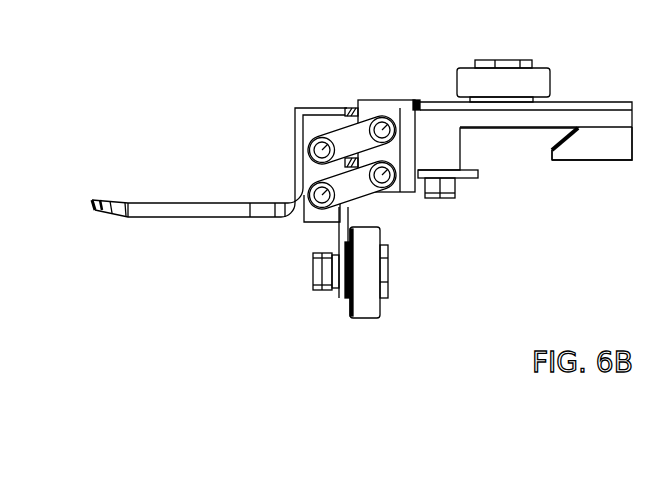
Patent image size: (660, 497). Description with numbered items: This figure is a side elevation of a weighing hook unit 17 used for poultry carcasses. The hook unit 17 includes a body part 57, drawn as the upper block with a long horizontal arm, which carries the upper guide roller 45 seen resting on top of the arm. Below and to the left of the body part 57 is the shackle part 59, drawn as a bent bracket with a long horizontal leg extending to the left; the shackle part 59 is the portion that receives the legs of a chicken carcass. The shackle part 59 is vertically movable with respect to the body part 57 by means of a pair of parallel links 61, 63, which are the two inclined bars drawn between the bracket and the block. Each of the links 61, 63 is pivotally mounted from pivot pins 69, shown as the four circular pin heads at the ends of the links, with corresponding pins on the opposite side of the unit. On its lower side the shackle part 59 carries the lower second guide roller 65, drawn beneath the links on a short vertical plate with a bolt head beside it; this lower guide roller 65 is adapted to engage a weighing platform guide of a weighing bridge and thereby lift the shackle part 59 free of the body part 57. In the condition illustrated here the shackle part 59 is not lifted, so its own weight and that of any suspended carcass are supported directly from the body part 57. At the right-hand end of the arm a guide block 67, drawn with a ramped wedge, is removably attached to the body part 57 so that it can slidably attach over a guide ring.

The hook unit 17 is at (215, 82).
The upper guide roller 45 is at (545, 78).
The body part 57 is at (428, 125).
The shackle part 59 is at (190, 210).
The parallel link 61 is at (348, 142).
The parallel link 63 is at (352, 183).
The lower guide roller 65 is at (368, 306).
The guide block 67 is at (602, 147).
The pivot pin 69 is at (320, 147).